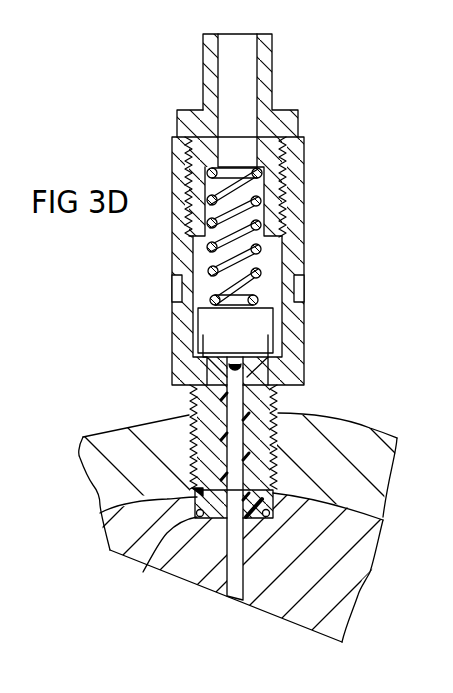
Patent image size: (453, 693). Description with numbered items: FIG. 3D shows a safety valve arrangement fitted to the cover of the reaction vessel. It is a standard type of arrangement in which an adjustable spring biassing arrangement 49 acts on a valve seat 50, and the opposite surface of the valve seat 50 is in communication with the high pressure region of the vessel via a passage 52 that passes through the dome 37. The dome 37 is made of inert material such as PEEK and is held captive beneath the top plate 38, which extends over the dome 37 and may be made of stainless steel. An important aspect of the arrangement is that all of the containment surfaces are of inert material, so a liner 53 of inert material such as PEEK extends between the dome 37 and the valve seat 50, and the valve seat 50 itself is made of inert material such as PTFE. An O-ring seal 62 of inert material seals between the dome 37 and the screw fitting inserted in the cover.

The adjustable spring biassing arrangement 49 is at (176, 88).
The valve seat 50 is at (215, 345).
The passage 52 is at (235, 583).
The liner 53 is at (198, 494).
The top plate 38 is at (160, 430).
The O-ring seal 62 is at (145, 567).
The dome 37 is at (323, 595).